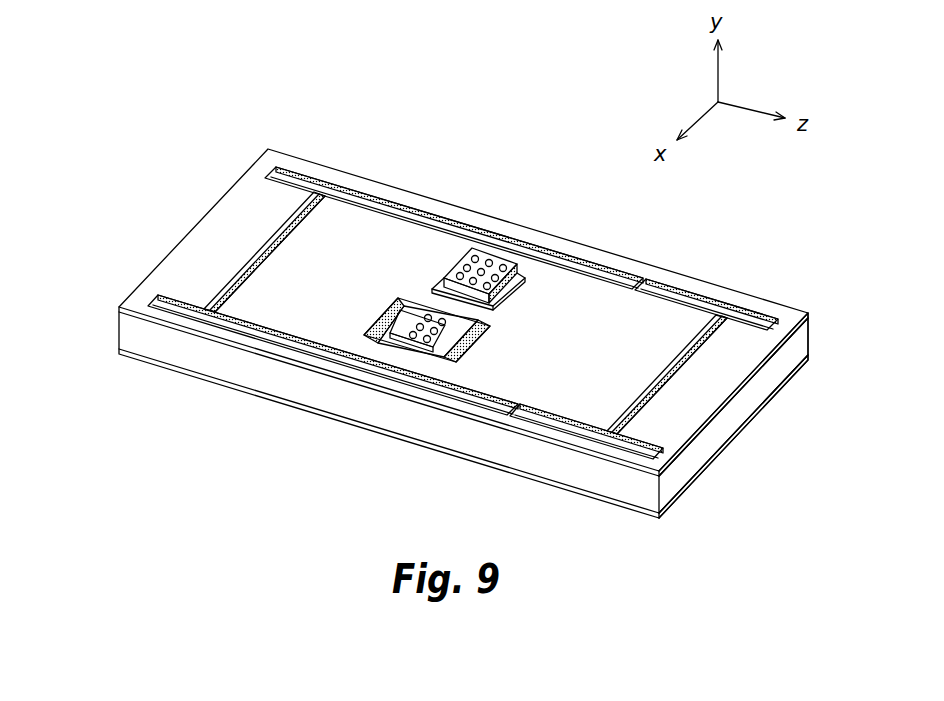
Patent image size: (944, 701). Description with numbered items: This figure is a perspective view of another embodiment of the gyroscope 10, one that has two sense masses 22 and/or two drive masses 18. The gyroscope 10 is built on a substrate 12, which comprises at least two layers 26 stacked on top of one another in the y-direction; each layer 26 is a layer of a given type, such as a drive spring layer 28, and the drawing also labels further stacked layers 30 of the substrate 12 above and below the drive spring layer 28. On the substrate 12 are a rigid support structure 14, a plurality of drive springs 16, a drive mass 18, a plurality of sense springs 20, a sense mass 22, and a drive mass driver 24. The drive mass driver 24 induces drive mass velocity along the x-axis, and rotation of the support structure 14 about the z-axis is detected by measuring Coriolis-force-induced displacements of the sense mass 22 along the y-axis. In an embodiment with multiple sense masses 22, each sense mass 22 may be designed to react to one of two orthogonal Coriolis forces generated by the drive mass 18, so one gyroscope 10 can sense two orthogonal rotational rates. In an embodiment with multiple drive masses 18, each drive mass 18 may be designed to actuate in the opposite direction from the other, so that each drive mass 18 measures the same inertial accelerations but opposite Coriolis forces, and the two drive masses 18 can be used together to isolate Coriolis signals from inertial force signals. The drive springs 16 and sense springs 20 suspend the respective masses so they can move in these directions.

The gyroscope 10 is at (212, 62).
The substrate 12 is at (118, 300).
The layer 26 is at (463, 412).
The rigid support structure 14 is at (170, 252).
The drive springs 16 is at (352, 195).
The drive mass 18 is at (287, 222).
The sense springs 20 is at (440, 273).
The sense mass 22 is at (520, 284).
The drive mass driver 24 is at (630, 272).
The drive spring layer 28 is at (809, 343).
The outer layer of substrate 30 is at (810, 313).